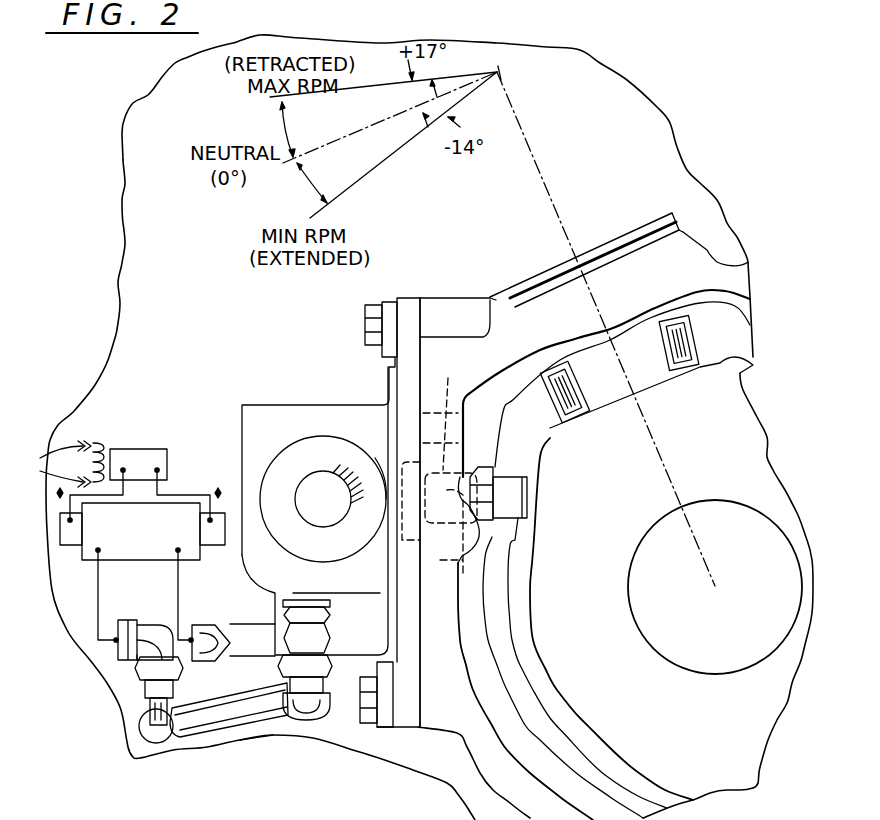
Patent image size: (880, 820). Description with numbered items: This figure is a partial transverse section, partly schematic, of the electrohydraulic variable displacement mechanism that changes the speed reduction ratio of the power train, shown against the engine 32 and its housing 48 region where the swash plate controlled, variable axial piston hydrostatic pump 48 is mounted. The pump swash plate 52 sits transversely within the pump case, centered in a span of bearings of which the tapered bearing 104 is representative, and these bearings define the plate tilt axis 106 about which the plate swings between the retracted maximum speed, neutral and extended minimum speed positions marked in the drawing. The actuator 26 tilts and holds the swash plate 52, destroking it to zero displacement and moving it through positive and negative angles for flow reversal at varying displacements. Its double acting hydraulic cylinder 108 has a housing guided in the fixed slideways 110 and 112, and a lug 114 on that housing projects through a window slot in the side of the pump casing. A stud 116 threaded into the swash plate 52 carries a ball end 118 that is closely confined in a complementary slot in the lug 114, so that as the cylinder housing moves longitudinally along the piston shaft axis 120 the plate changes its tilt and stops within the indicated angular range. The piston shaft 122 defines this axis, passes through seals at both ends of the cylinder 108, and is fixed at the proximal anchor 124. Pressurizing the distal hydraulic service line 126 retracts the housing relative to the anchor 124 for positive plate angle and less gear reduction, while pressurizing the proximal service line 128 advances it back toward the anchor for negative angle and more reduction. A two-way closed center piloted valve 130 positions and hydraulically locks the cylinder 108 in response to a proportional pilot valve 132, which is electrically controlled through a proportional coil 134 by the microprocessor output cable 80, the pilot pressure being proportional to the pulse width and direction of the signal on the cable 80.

The actuator 26 is at (243, 398).
The engine 32 is at (257, 777).
The variable axial piston hydrostatic pump 48 is at (718, 250).
The pump swash plate 52 is at (533, 550).
The microprocessor output cable 80 is at (40, 460).
The tapered bearing 104 is at (688, 335).
The plate tilt axis 106 is at (597, 318).
The double acting hydraulic cylinder 108 is at (373, 458).
The slideway 110 is at (405, 350).
The slideway 112 is at (405, 665).
The lug 114 is at (458, 568).
The stud 116 is at (507, 480).
The ball end 118 is at (439, 461).
The piston shaft axis 120 is at (323, 497).
The piston shaft 122 is at (297, 510).
The anchor 124 is at (350, 500).
The distal hydraulic service line 126 is at (247, 624).
The proximal service line 128 is at (220, 720).
The two-way closed center piloted valve 130 is at (93, 538).
The proportional pilot valve 132 is at (127, 452).
The proportional coil 134 is at (103, 442).